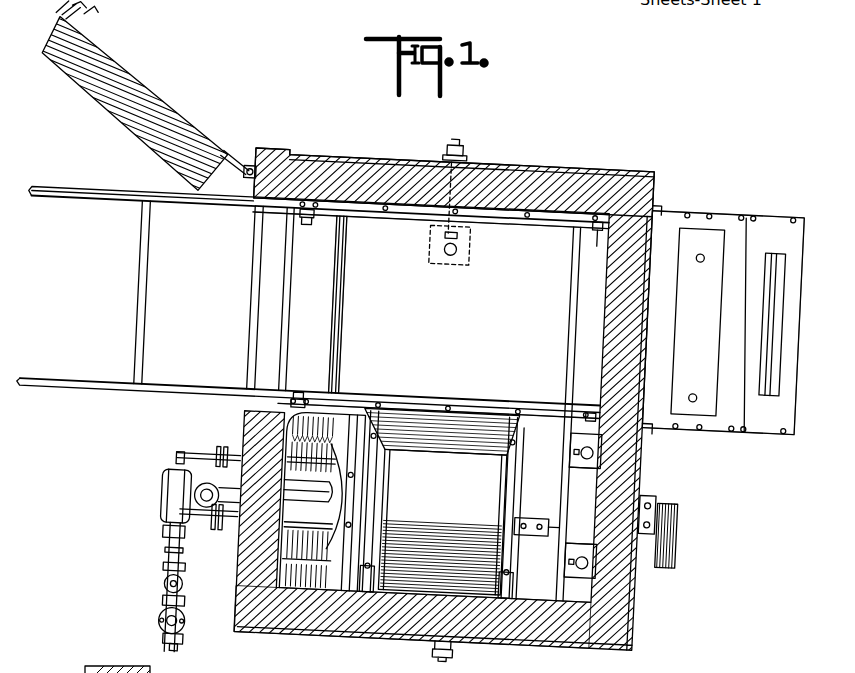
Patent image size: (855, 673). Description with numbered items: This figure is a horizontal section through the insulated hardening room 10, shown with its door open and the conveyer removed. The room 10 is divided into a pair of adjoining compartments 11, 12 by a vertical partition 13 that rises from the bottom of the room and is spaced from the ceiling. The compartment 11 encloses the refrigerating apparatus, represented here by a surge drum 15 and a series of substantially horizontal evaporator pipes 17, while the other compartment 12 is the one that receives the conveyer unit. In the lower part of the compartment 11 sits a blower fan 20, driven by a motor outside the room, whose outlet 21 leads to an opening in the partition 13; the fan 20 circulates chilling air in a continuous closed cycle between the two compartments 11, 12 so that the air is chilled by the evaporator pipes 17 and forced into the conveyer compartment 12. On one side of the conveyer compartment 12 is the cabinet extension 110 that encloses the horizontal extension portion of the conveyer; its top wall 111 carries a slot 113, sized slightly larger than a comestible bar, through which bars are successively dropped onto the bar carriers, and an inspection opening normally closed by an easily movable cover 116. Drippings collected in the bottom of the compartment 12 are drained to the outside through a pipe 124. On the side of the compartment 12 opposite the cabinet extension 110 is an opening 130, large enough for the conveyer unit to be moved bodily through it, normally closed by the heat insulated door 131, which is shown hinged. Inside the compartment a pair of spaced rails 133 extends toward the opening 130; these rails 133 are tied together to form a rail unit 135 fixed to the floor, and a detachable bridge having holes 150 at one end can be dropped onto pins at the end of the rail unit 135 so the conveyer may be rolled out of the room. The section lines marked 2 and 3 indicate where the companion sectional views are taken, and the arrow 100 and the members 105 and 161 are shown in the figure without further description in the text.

The hardening room 10 is at (633, 623).
The compartment 11 is at (553, 576).
The compartment 12 is at (539, 232).
The vertical partition 13 is at (428, 399).
The surge drum 15 is at (358, 534).
The evaporator pipes 17 is at (359, 556).
The blower fan 20 is at (425, 578).
The outlet 21 is at (471, 420).
The direction of feed 100 is at (104, 311).
The rails 105 is at (89, 206).
The cabinet extension 110 is at (737, 212).
The top wall 111 is at (737, 409).
The slot 113 is at (790, 371).
The cover 116 is at (694, 219).
The pipe 124 is at (462, 136).
The opening 130 is at (262, 239).
The door 131 is at (121, 74).
The rails 133 is at (428, 209).
The rail unit 135 is at (352, 302).
The holes 150 is at (309, 217).
The bracket 161 is at (598, 214).
The section line 2 is at (382, 126).
The section line 3 is at (797, 273).